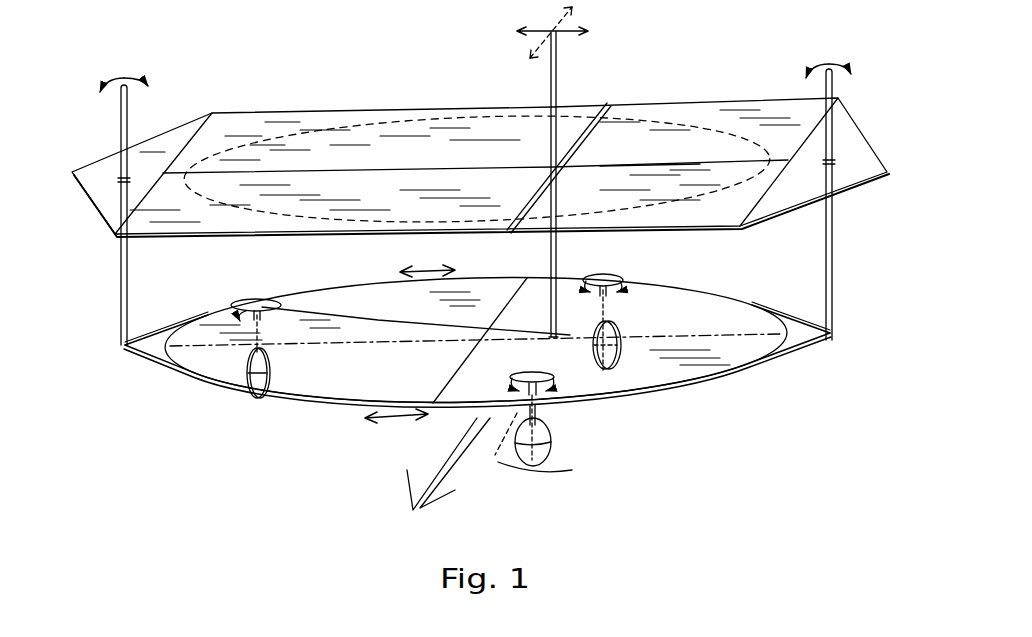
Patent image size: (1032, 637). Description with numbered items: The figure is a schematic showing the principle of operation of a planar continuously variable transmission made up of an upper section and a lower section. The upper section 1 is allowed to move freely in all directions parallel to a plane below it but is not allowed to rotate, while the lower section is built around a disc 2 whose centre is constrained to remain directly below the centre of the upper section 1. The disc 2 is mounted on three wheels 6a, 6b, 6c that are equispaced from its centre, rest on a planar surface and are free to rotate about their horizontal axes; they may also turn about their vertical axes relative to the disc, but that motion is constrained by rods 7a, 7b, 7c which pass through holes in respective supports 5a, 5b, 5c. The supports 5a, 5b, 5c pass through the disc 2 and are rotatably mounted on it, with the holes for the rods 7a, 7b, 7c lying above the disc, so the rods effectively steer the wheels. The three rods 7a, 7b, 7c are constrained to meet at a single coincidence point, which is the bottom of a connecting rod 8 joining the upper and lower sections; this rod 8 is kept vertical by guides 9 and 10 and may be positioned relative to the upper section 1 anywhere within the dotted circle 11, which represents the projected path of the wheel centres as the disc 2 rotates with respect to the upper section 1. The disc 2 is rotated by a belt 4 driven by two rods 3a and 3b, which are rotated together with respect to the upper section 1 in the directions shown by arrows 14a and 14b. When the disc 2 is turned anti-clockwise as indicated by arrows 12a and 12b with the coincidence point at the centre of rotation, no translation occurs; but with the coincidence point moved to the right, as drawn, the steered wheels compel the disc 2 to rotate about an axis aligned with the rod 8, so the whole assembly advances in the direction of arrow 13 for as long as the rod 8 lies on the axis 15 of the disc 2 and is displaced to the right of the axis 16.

The upper section 1 is at (272, 118).
The disc 2 is at (628, 355).
The rod 3a is at (132, 107).
The rod 3b is at (820, 90).
The belt 4 is at (148, 378).
The support 5a is at (262, 335).
The support 5b is at (610, 310).
The support 5c is at (540, 418).
The wheel 6a is at (246, 366).
The wheel 6b is at (622, 329).
The wheel 6c is at (554, 445).
The rod 7a is at (378, 320).
The rod 7b is at (628, 270).
The rod 7c is at (548, 360).
The connecting rod 8 is at (560, 78).
The guide 9 is at (586, 142).
The guide 10 is at (626, 159).
The dotted circle 11 is at (393, 118).
The arrow 12a is at (382, 424).
The arrow 12b is at (442, 265).
The arrow 13 is at (446, 460).
The arrow 14a is at (121, 78).
The arrow 14b is at (823, 64).
The axis 15 is at (377, 348).
The axis 16 is at (450, 377).